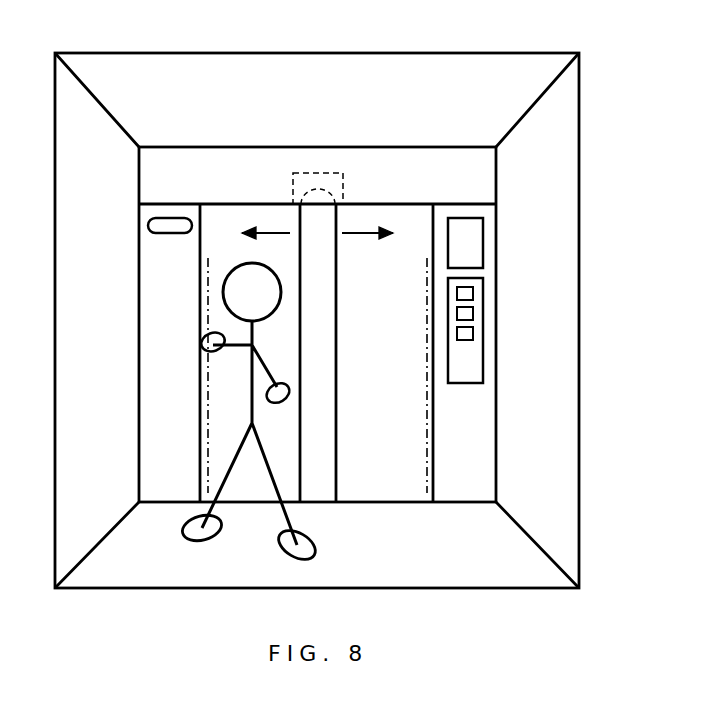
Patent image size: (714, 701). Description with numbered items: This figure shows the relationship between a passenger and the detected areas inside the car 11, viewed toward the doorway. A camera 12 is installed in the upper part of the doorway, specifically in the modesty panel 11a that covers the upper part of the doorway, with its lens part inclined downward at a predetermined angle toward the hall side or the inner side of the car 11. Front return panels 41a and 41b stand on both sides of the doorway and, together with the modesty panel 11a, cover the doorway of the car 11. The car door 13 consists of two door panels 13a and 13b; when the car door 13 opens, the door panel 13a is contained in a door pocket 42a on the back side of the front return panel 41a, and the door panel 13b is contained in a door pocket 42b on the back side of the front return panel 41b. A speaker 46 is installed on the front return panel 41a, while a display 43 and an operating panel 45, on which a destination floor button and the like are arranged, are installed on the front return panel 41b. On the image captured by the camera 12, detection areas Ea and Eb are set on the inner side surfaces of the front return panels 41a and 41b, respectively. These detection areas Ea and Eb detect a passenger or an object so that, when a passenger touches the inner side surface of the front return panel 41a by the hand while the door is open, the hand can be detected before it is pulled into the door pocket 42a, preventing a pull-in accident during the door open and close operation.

The car 11 is at (522, 53).
The modesty panel 11a is at (238, 161).
The camera 12 is at (323, 193).
The car door 13 is at (250, 478).
The door panel 13a is at (290, 501).
The door panel 13b is at (390, 480).
The front return panel 41a is at (152, 418).
The front return panel 41b is at (477, 420).
The door pocket 42a is at (172, 330).
The door pocket 42b is at (447, 273).
The display 43 is at (472, 243).
The operating panel 45 is at (482, 333).
The speaker 46 is at (170, 235).
The detection area Ea is at (206, 460).
The detection area Eb is at (427, 460).